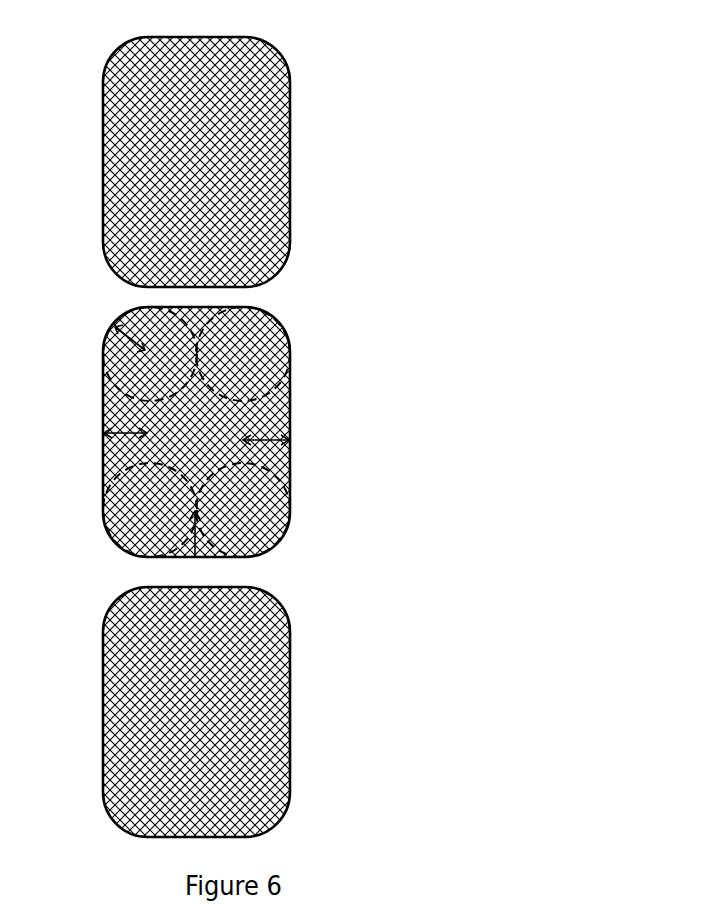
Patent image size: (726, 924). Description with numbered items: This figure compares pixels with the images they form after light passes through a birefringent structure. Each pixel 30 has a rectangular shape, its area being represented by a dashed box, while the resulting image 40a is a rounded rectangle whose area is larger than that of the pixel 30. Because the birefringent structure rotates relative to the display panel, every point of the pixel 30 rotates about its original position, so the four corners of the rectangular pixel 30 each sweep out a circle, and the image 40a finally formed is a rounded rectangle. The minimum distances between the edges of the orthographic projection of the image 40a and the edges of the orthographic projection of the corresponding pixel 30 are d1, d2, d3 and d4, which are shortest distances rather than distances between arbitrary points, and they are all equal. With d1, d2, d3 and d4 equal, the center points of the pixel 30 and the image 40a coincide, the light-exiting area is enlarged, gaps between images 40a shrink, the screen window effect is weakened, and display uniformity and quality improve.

The pixel 30 is at (130, 130).
The image 40a is at (290, 228).
The minimum distance d1 is at (110, 326).
The minimum distance d2 is at (104, 434).
The minimum distance d3 is at (192, 549).
The minimum distance d4 is at (284, 439).